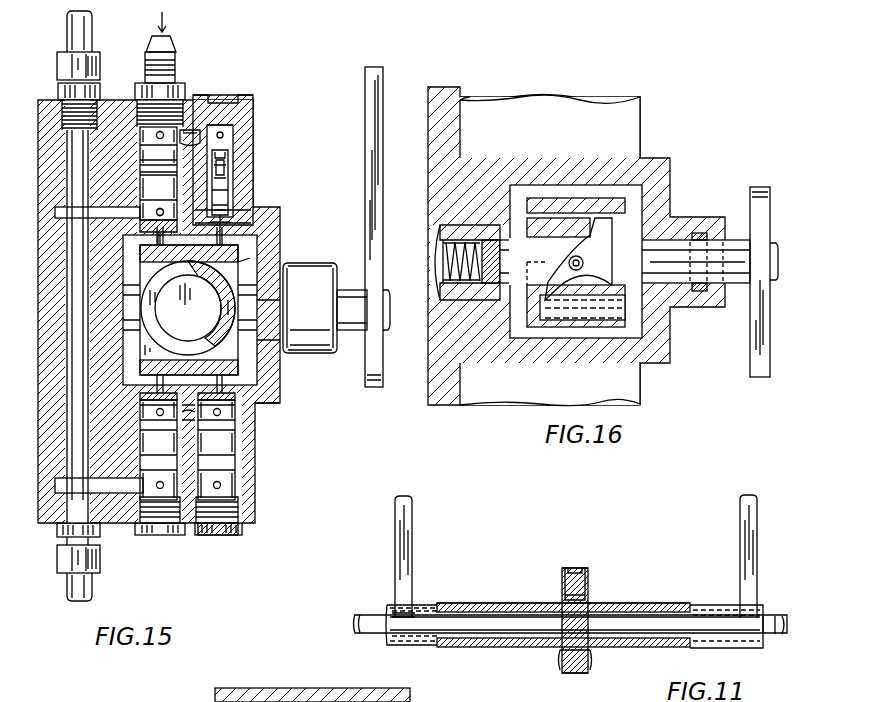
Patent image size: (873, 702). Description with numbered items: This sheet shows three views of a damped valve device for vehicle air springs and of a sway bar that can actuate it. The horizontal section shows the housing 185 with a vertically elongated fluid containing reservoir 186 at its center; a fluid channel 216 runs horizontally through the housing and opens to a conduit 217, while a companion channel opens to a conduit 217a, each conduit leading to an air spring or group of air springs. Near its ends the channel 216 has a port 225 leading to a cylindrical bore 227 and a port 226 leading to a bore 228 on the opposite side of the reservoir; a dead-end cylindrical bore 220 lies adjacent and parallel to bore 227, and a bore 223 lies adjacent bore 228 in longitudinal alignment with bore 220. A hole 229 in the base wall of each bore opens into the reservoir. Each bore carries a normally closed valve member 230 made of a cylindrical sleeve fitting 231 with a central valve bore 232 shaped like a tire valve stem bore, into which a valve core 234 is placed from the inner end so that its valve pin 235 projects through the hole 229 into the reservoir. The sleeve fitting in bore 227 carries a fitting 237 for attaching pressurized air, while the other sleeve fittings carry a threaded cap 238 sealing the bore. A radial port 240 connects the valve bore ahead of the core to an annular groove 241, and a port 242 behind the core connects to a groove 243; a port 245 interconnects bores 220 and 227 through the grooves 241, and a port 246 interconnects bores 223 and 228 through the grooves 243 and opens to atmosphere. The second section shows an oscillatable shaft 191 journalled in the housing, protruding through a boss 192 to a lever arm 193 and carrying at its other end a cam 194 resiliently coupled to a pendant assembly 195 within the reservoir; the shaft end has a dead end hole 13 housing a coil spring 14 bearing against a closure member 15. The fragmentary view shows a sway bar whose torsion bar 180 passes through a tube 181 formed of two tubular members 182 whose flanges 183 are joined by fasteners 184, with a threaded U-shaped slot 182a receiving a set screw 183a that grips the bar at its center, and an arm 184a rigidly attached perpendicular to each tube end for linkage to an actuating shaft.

In FIG. 16, the dead end hole 13 is at (466, 240).
In FIG. 16, the coil spring 14 is at (492, 286).
In FIG. 16, the closure member 15 is at (432, 254).
In FIG. 11, the torsion bar 180 is at (365, 636).
In FIG. 11, the tube 181 is at (465, 600).
In FIG. 11, the tubular member 182 is at (413, 648).
In FIG. 11, the U-shaped slot 182a is at (565, 593).
In FIG. 11, the flange 183 is at (578, 675).
In FIG. 11, the set screw 183a is at (580, 568).
In FIG. 11, the fasteners 184 is at (560, 662).
In FIG. 11, the arm 184a is at (412, 522).
In FIG. 16, the housing 185 is at (444, 410).
In FIG. 15, the fluid containing reservoir 186 is at (255, 376).
In FIG. 16, the fluid containing reservoir 186 is at (588, 196).
In FIG. 15, the oscillatable shaft 191 is at (345, 290).
In FIG. 16, the oscillatable shaft 191 is at (712, 240).
In FIG. 15, the boss 192 is at (312, 262).
In FIG. 16, the boss 192 is at (698, 292).
In FIG. 15, the lever arm 193 is at (370, 98).
In FIG. 16, the lever arm 193 is at (752, 352).
In FIG. 16, the cam 194 is at (530, 233).
In FIG. 15, the pendant assembly 195 is at (252, 253).
In FIG. 16, the pendant assembly 195 is at (585, 348).
In FIG. 15, the fluid channel 216 is at (80, 330).
In FIG. 15, the conduit 217 is at (66, 585).
In FIG. 15, the conduit 217a is at (70, 32).
In FIG. 15, the cylindrical bore 220 is at (230, 168).
In FIG. 15, the bore 223 is at (238, 455).
In FIG. 15, the port 225 is at (105, 219).
In FIG. 15, the port 226 is at (118, 493).
In FIG. 15, the cylindrical bore 227 is at (143, 172).
In FIG. 15, the bore 228 is at (143, 435).
In FIG. 15, the hole 229 is at (140, 248).
In FIG. 15, the valve member 230 is at (244, 185).
In FIG. 15, the sleeve fitting 231 is at (142, 156).
In FIG. 15, the valve bore 232 is at (223, 136).
In FIG. 15, the valve core 234 is at (245, 208).
In FIG. 15, the valve pin 235 is at (200, 360).
In FIG. 15, the fitting 237 is at (172, 48).
In FIG. 15, the threaded cap 238 is at (230, 100).
In FIG. 15, the port 240 is at (157, 135).
In FIG. 15, the annular groove 241 is at (142, 143).
In FIG. 15, the port 242 is at (142, 190).
In FIG. 15, the annular groove 243 is at (158, 212).
In FIG. 15, the port 245 is at (190, 128).
In FIG. 15, the port 246 is at (258, 406).